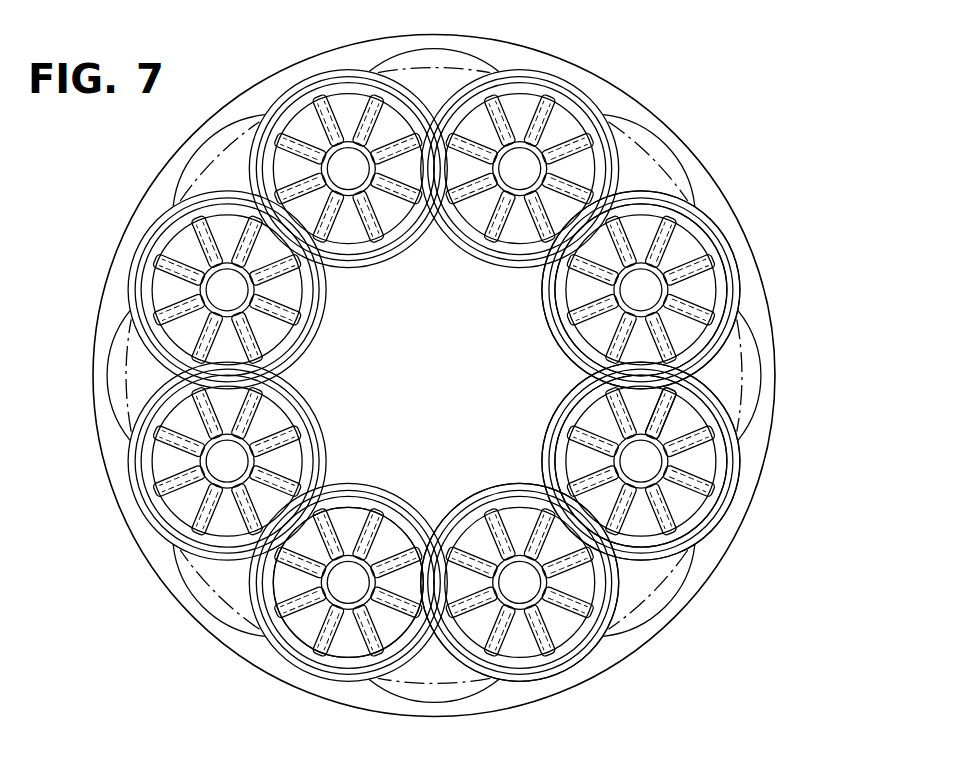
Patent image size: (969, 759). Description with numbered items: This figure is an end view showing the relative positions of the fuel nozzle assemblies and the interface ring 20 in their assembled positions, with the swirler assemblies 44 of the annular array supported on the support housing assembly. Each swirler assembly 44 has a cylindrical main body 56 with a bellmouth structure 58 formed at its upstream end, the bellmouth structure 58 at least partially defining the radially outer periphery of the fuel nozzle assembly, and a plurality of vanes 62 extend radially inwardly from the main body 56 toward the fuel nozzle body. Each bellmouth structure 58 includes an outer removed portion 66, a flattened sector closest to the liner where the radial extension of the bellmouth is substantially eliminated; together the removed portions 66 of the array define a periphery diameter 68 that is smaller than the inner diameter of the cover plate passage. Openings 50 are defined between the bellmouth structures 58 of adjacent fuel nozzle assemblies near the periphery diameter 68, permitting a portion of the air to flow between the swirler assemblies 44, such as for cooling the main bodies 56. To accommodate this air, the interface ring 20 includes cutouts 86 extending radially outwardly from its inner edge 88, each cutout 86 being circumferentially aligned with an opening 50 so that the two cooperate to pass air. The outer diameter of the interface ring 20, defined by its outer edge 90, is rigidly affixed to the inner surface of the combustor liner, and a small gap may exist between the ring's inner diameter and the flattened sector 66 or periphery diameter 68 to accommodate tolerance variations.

The interface ring 20 is at (448, 360).
The swirler assembly 44 is at (458, 76).
The opening 50 is at (630, 167).
The main body 56 is at (273, 582).
The bellmouth structure 58 is at (485, 488).
The vane 62 is at (663, 408).
The outer removed portion 66 is at (723, 487).
The periphery diameter 68 is at (672, 592).
The cutout 86 is at (668, 156).
The inner edge 88 is at (690, 226).
The outer edge 90 is at (771, 437).